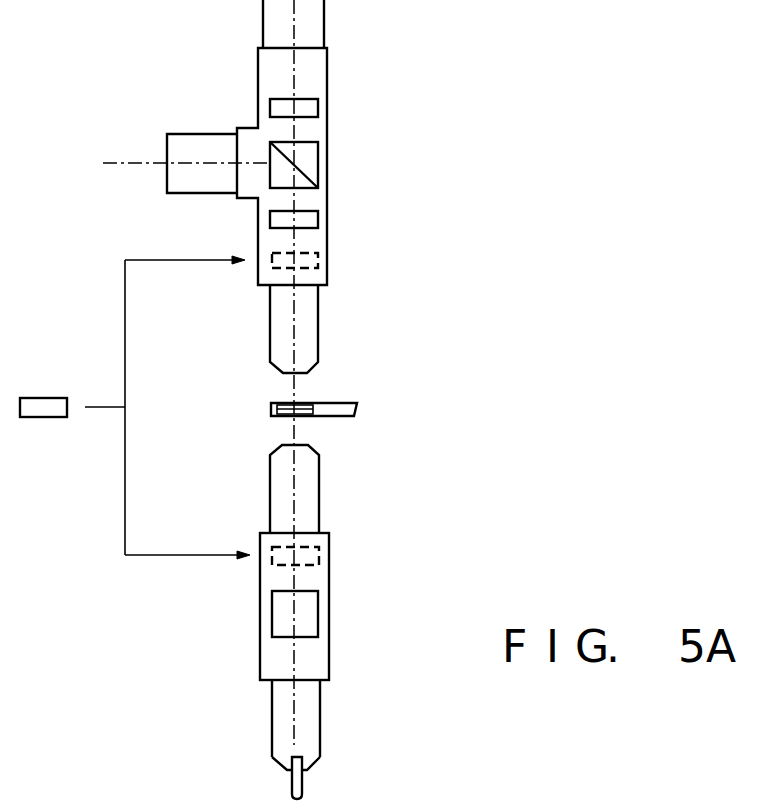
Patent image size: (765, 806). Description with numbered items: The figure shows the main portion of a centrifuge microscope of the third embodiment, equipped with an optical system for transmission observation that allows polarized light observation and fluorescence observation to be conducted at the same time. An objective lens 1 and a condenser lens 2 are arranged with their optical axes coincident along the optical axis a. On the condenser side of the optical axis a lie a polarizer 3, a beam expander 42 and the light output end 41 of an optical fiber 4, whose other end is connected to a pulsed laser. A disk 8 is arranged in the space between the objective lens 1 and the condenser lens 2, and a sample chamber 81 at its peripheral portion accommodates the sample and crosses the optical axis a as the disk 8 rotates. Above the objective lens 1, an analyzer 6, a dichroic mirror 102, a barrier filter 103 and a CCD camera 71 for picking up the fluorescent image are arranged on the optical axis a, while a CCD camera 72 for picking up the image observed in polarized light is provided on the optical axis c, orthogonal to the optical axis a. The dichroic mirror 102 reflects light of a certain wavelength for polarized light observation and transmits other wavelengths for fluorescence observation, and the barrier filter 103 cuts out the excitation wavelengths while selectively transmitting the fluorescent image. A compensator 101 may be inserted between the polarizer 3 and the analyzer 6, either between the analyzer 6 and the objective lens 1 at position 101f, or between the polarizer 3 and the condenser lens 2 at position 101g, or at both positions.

The CCD camera 71 is at (324, 13).
The CCD camera 72 is at (171, 143).
The barrier filter 103 is at (307, 108).
The dichroic mirror 102 is at (309, 167).
The analyzer 6 is at (307, 223).
The compensator position 101f is at (330, 268).
The optical axis c is at (122, 165).
The optical axis a is at (297, 356).
The objective lens 1 is at (280, 318).
The disk 8 is at (341, 401).
The sample chamber 81 is at (271, 407).
The compensator 101 is at (42, 418).
The condenser lens 2 is at (275, 487).
The compensator position 101g is at (331, 557).
The polarizer 3 is at (280, 612).
The beam expander 42 is at (285, 727).
The light output end 41 is at (302, 758).
The optical fiber 4 is at (302, 786).